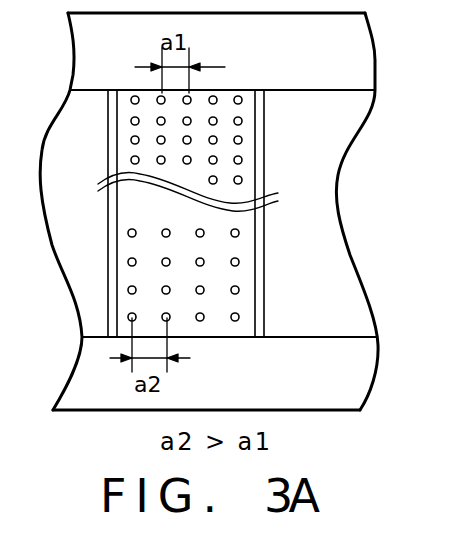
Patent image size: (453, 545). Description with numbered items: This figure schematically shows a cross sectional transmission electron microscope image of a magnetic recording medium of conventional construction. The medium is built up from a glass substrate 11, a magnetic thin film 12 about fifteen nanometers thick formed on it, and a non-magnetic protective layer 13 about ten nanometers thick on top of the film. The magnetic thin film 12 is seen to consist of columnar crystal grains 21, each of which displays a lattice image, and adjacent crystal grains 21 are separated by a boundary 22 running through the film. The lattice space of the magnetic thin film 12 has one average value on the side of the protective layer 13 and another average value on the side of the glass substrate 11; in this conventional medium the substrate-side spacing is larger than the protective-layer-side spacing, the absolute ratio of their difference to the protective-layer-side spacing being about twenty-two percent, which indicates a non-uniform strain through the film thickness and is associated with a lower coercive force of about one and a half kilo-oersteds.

The glass substrate 11 is at (354, 373).
The magnetic thin film 12 is at (319, 191).
The non-magnetic protective layer 13 is at (376, 53).
The columnar crystal grain 21 is at (90, 311).
The boundary between adjacent crystal grains 22 is at (108, 158).